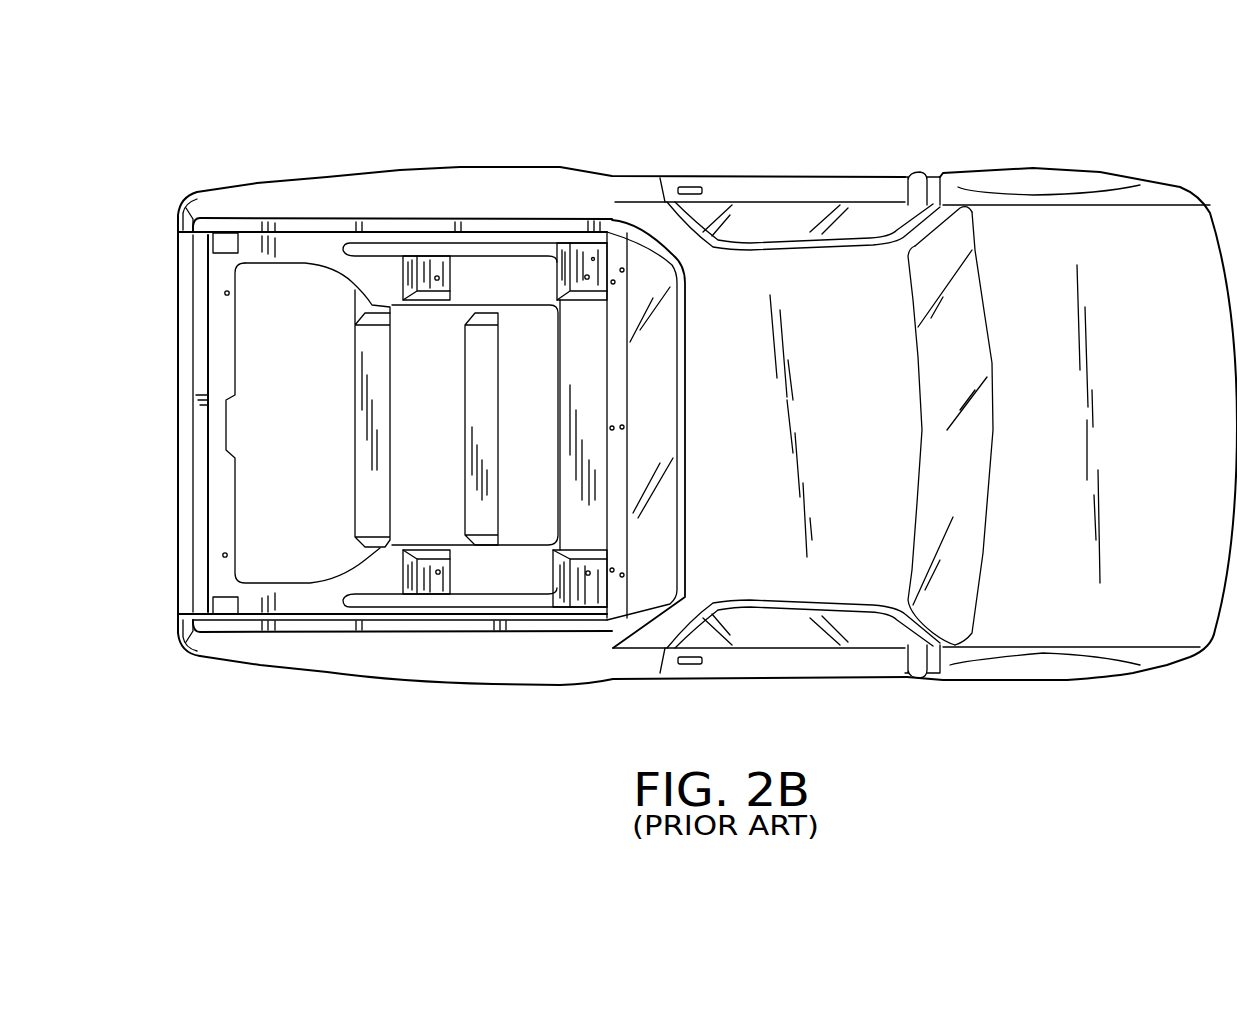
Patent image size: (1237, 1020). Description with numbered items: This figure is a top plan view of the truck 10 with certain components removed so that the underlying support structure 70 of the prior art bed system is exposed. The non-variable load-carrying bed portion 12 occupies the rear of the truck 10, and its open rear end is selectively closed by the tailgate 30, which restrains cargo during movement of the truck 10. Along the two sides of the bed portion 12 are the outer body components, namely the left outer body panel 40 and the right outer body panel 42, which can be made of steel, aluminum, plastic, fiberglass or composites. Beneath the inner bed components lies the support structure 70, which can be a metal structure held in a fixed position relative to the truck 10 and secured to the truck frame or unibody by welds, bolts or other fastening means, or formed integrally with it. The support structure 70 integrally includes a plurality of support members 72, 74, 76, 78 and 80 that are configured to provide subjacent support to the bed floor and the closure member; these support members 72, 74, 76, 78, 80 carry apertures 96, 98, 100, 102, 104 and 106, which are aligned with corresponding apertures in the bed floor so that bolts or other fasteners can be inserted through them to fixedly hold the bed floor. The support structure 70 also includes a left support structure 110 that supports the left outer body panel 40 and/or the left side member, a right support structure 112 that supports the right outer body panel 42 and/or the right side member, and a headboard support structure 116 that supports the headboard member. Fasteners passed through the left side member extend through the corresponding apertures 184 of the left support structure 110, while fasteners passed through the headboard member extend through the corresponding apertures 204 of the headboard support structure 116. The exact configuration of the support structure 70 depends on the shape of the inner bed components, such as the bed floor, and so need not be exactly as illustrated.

The truck 10 is at (837, 128).
The bed portion 12 is at (588, 150).
The tailgate 30 is at (185, 483).
The left outer body panel 40 is at (463, 176).
The right outer body panel 42 is at (462, 672).
The support structure 70 is at (333, 258).
The support member 72 is at (595, 259).
The support member 74 is at (446, 284).
The support member 76 is at (233, 385).
The support member 78 is at (583, 603).
The support member 80 is at (425, 590).
The aperture 96 is at (587, 280).
The aperture 98 is at (437, 281).
The aperture 100 is at (229, 295).
The aperture 102 is at (590, 571).
The aperture 104 is at (437, 569).
The aperture 106 is at (227, 554).
The left support structure 110 is at (362, 238).
The right support structure 112 is at (338, 613).
The headboard support structure 116 is at (620, 458).
The apertures 184 is at (428, 240).
The apertures 204 is at (622, 427).